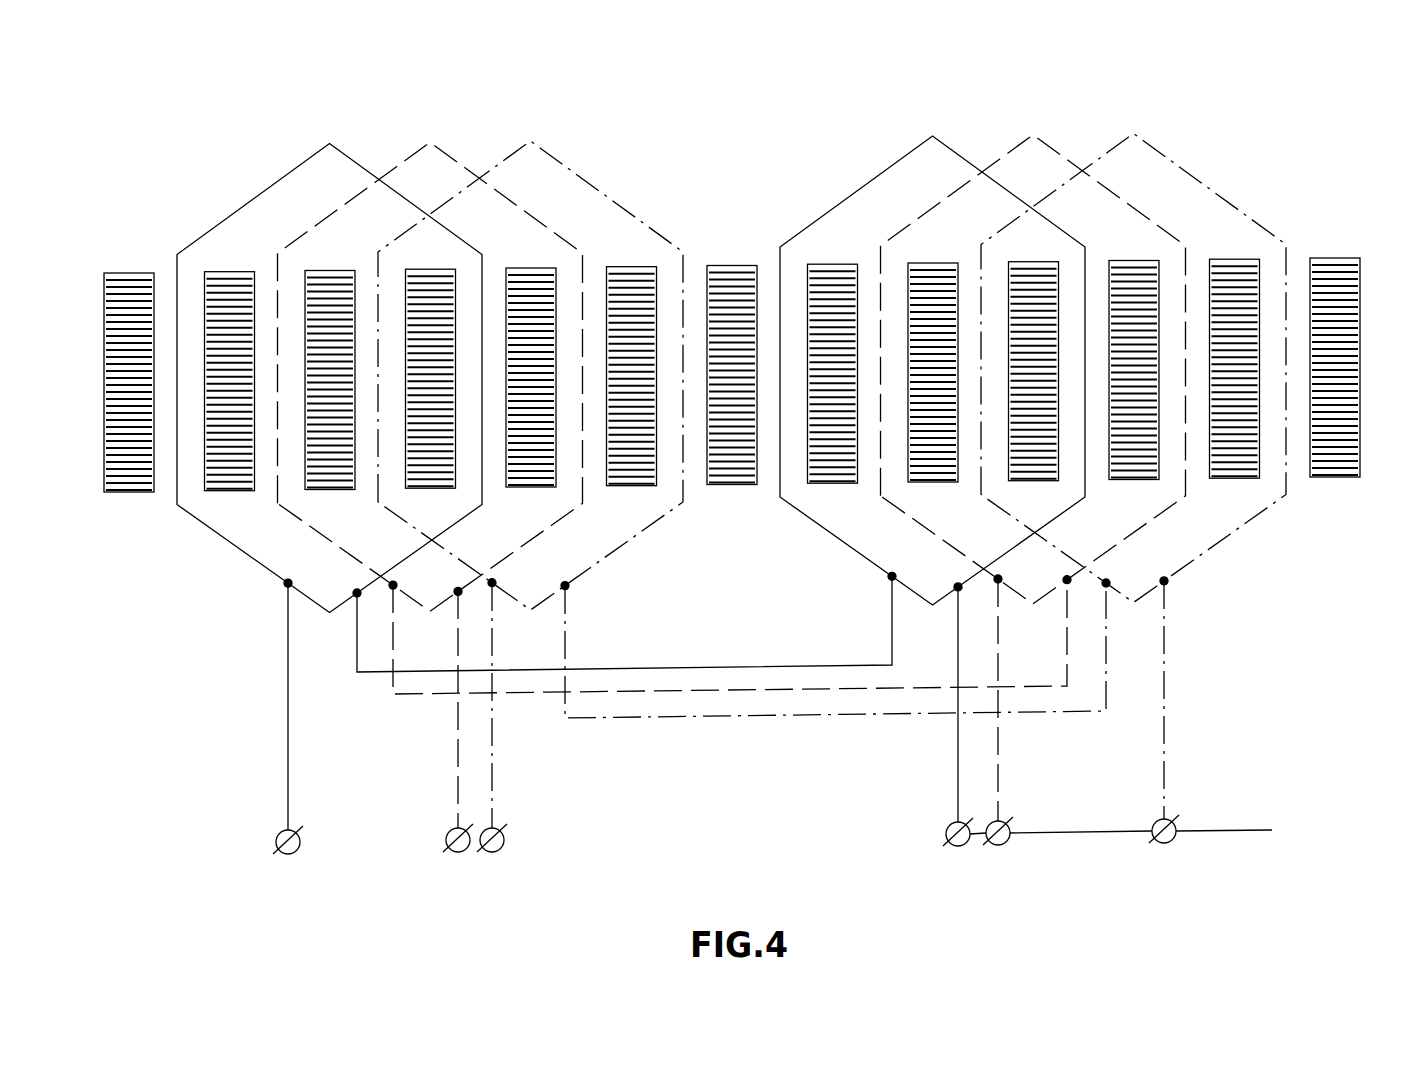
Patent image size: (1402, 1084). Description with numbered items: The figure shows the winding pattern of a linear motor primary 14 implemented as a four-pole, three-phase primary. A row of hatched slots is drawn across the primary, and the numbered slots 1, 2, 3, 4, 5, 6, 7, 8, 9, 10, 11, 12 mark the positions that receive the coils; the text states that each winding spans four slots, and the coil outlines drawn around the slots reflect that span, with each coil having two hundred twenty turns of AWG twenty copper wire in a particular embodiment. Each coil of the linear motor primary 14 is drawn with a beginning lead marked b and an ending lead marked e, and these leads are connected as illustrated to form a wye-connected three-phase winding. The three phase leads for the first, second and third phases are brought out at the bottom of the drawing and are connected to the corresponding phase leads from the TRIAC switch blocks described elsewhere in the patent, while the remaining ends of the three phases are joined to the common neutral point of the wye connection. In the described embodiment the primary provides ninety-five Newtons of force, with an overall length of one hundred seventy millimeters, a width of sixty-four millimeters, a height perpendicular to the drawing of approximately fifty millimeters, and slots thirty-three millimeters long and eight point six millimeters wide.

The slot 1 is at (129, 368).
The slot 2 is at (230, 367).
The slot 3 is at (330, 366).
The slot 4 is at (431, 364).
The slot 5 is at (531, 363).
The slot 6 is at (632, 362).
The slot 7 is at (732, 361).
The slot 8 is at (833, 359).
The slot 9 is at (933, 358).
The slot 10 is at (1034, 357).
The slot 11 is at (1134, 356).
The slot 12 is at (1235, 354).
The linear motor primary 14 is at (1240, 148).